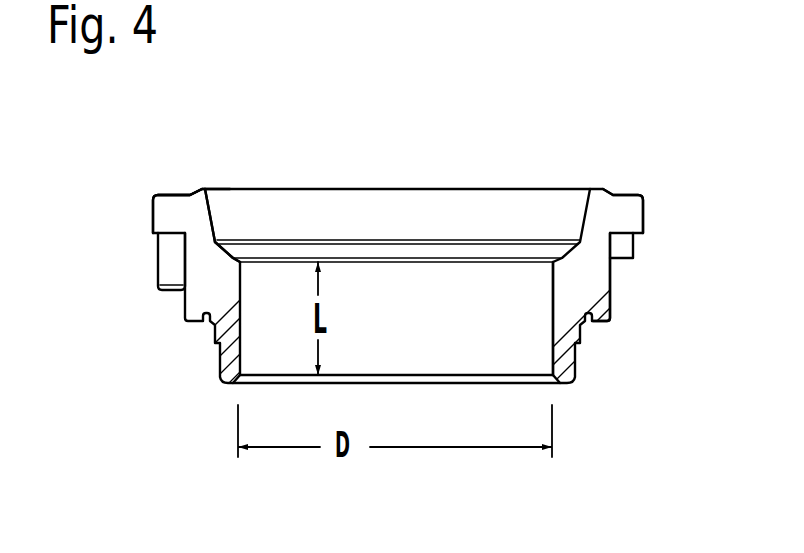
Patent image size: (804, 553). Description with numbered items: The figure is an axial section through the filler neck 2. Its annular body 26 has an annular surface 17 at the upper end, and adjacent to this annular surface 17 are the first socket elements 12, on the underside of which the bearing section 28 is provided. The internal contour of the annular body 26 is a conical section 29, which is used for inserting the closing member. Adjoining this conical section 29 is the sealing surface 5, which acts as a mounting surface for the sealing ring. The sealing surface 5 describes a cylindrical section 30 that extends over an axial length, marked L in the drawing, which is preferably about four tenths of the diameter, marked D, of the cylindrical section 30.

The filler neck 2 is at (192, 332).
The sealing surface 5 is at (229, 261).
The first socket elements 12 is at (162, 212).
The annular surface 17 is at (177, 196).
The annular body 26 is at (592, 297).
The bearing section 28 is at (174, 236).
The conical section 29 is at (211, 218).
The cylindrical section 30 is at (553, 303).